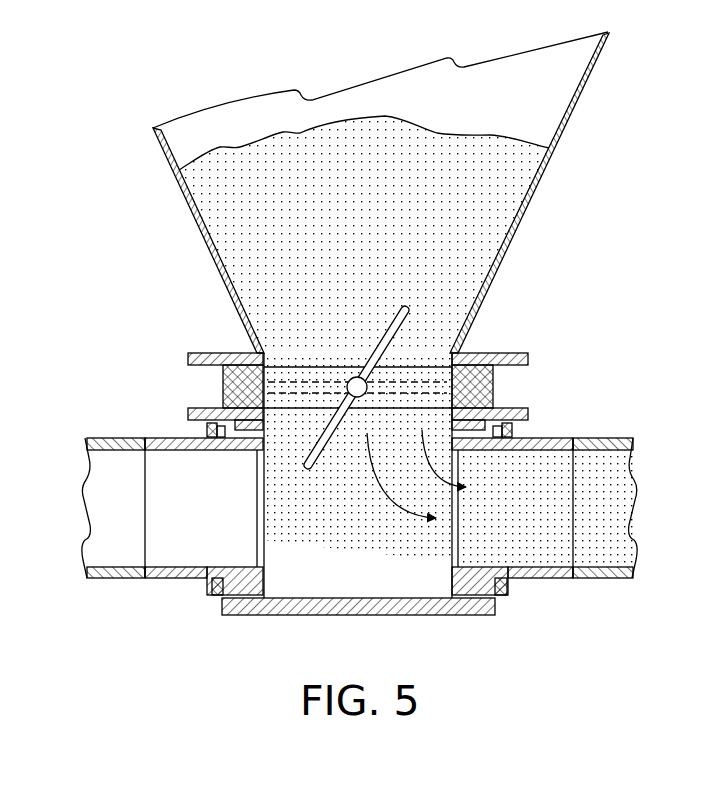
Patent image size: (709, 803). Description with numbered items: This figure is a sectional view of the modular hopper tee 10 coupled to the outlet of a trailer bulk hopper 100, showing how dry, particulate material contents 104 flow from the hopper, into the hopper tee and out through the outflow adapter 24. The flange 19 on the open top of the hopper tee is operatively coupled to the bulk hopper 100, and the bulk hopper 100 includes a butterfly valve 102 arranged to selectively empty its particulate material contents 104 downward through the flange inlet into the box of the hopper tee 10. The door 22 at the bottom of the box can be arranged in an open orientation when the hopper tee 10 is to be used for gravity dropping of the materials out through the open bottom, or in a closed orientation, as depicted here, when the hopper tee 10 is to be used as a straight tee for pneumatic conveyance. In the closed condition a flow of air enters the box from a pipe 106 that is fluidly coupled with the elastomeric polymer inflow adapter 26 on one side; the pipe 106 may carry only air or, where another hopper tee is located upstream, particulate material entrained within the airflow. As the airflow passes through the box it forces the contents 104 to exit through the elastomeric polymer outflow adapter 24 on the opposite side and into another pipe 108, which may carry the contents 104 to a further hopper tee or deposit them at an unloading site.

The modular hopper tee 10 is at (350, 520).
The flange 19 is at (530, 413).
The door 22 is at (368, 615).
The outflow adapter 24 is at (556, 604).
The inflow adapter 26 is at (155, 437).
The trailer bulk hopper 100 is at (568, 118).
The butterfly valve 102 is at (398, 342).
The particulate material contents 104 is at (372, 241).
The pipe 106 is at (150, 512).
The pipe 108 is at (620, 438).